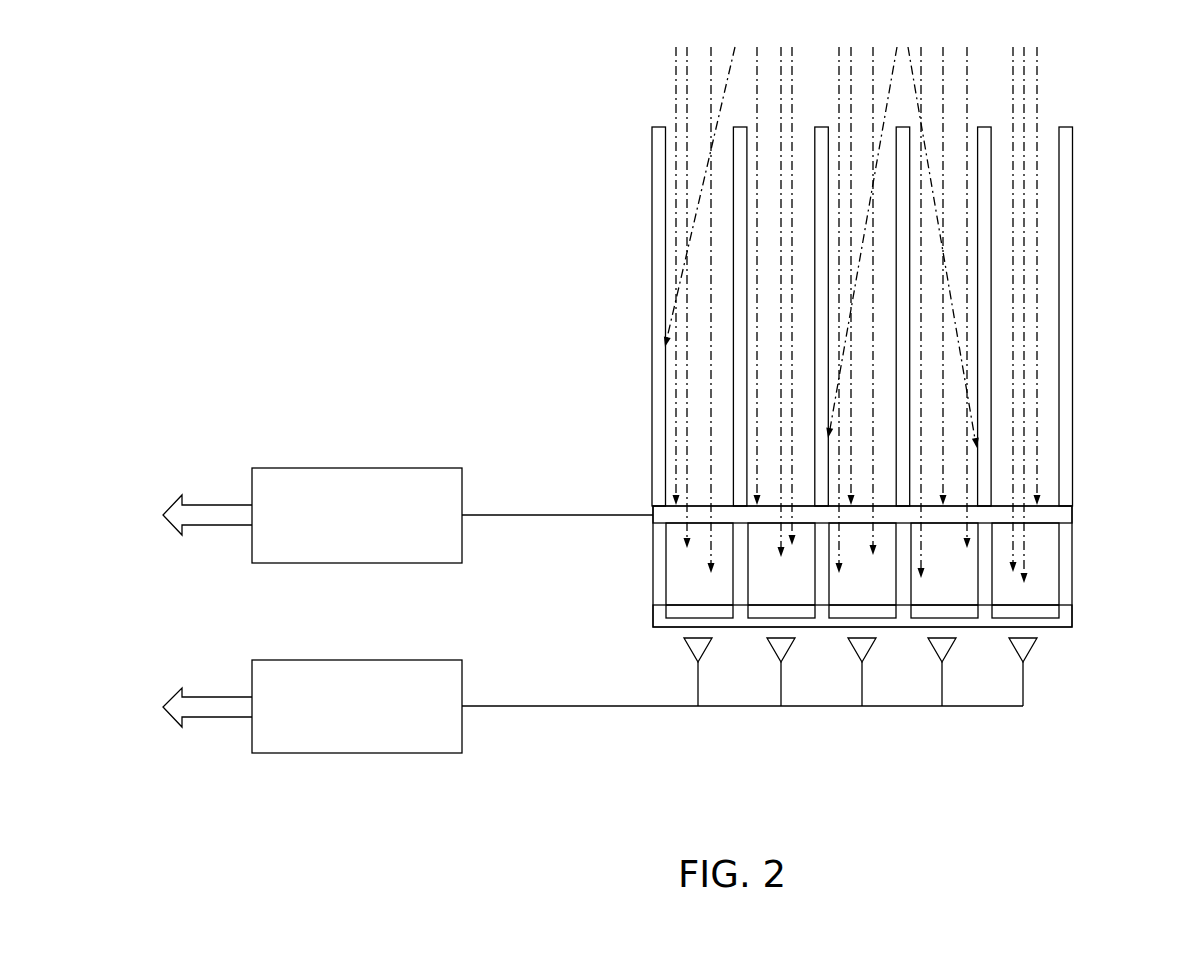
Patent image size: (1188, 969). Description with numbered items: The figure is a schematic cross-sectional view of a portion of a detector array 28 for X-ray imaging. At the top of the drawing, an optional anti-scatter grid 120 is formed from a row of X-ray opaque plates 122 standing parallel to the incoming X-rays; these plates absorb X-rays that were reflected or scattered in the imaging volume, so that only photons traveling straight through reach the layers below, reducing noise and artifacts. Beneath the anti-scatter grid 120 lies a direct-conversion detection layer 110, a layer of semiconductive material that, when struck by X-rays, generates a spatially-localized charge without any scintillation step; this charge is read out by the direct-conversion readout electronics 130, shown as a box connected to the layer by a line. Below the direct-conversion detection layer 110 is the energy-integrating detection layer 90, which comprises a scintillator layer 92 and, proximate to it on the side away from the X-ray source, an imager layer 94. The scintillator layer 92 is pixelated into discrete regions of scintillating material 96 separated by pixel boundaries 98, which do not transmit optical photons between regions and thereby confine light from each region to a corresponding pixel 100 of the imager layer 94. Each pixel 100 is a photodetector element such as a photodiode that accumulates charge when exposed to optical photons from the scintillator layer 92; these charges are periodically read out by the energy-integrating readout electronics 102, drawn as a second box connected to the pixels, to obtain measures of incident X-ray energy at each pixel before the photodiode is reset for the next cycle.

The detector array 28 is at (575, 82).
The energy-integrating detection layer 90 is at (631, 522).
The scintillator layer 92 is at (1087, 560).
The imager layer 94 is at (1087, 618).
The scintillating material 96 is at (724, 593).
The pixel boundaries 98 is at (985, 588).
The pixel 100 is at (806, 612).
The energy-integrating readout electronics 102 is at (402, 660).
The direct-conversion detection layer 110 is at (1087, 515).
The anti-scatter grid 120 is at (1090, 212).
The X-ray opaque plates 122 is at (983, 133).
The direct-conversion readout electronics 130 is at (356, 468).